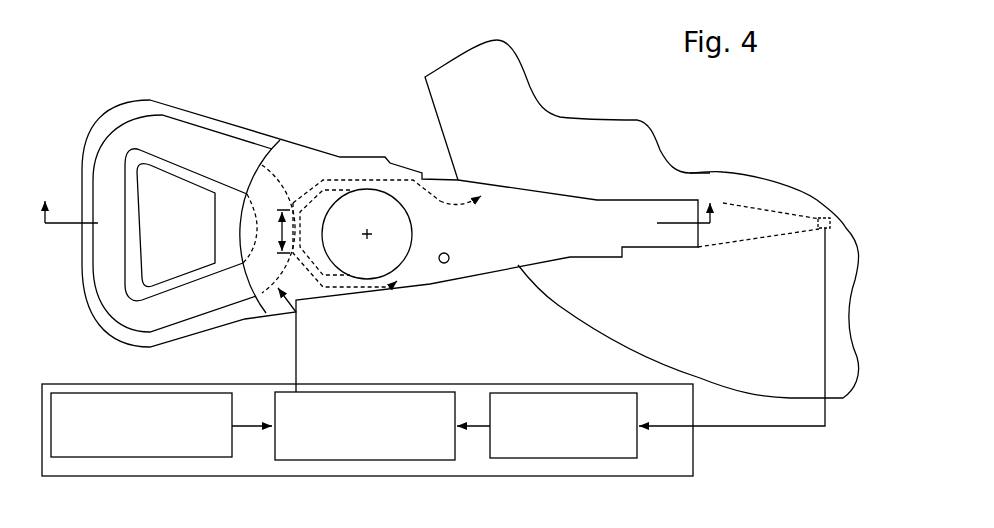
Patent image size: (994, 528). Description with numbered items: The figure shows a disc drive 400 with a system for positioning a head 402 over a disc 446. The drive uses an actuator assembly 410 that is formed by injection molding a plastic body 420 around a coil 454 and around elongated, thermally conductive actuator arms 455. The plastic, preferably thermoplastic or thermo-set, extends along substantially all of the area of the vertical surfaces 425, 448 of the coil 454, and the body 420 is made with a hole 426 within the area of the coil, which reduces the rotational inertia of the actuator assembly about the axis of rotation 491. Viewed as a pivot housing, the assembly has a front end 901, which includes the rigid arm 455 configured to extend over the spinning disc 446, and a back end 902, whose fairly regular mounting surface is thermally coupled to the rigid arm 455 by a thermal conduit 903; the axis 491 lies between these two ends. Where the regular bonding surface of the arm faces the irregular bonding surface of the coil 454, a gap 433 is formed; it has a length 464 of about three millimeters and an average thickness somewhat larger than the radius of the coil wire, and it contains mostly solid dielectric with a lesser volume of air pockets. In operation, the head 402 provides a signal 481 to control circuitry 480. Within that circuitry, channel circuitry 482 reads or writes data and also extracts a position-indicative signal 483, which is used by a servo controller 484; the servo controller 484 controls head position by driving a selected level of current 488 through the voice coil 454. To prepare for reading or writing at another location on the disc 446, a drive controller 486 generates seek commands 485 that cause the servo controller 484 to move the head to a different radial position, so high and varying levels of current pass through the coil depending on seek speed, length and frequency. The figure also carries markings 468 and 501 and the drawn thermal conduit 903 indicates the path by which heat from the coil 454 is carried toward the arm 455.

The disc drive 400 is at (107, 71).
The actuator assembly 410 is at (246, 91).
The plastic body 420 is at (103, 133).
The vertical surface of coil 425 is at (183, 169).
The hole 426 is at (152, 246).
The coil 454 is at (153, 122).
The length of gap 464 is at (280, 232).
The vertical surface of coil 448 is at (276, 167).
The gap 433 is at (296, 203).
The flex circuit 468 is at (359, 176).
The actuator arm 455 is at (433, 192).
The disc 446 is at (503, 121).
The axis of rotation 491 is at (373, 239).
The front end 901 is at (392, 229).
The back end 902 is at (339, 235).
The thermal conduit 903 is at (305, 231).
The reference axis 501 is at (379, 220).
The head 402 is at (826, 219).
The signal 481 is at (807, 427).
The current 488 is at (298, 357).
The control circuitry 480 is at (682, 470).
The drive controller 486 is at (195, 403).
The seek commands 485 is at (247, 423).
The servo controller 484 is at (418, 402).
The position-indicative signal 483 is at (482, 425).
The channel circuitry 482 is at (570, 397).